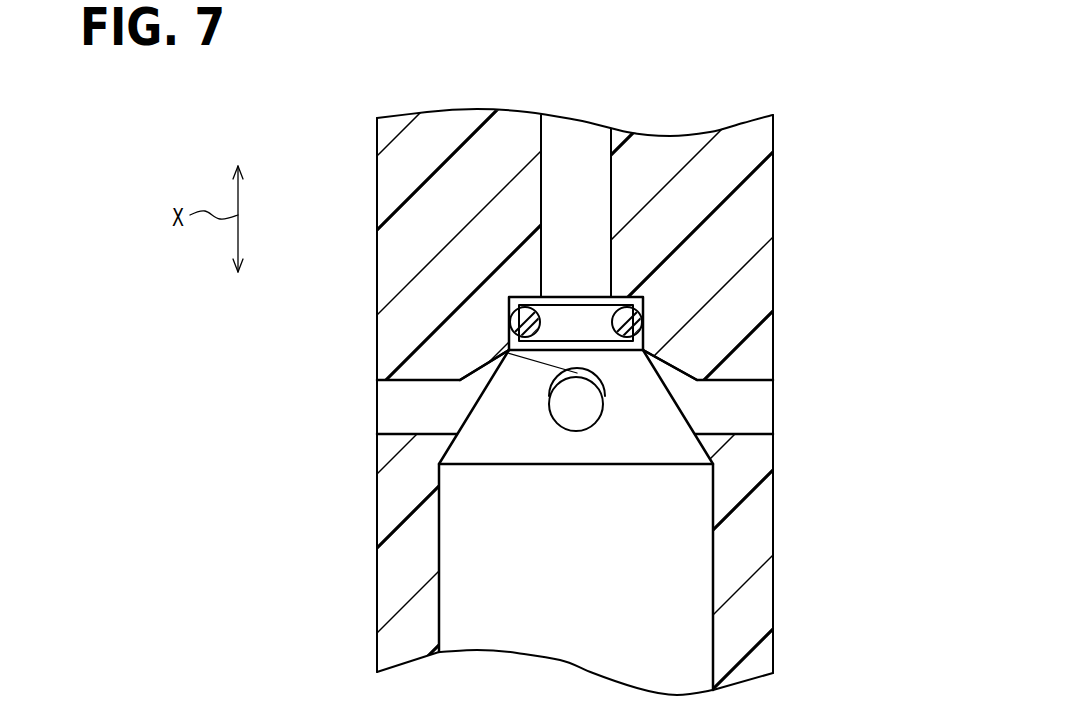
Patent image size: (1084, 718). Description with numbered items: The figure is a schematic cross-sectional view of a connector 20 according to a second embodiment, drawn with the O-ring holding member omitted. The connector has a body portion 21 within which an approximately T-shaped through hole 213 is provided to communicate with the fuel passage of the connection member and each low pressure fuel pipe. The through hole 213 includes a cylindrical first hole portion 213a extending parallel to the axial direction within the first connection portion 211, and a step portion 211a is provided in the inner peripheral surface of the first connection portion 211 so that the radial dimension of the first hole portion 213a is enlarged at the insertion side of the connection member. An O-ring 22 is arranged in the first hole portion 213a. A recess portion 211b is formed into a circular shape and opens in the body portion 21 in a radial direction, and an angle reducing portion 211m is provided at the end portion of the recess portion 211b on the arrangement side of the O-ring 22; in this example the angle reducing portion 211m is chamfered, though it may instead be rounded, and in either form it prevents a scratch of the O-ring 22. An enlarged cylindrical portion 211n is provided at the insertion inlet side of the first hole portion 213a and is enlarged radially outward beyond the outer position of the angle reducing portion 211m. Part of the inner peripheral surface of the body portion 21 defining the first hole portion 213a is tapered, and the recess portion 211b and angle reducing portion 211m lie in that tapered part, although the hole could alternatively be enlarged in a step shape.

The connector 20 is at (542, 363).
The body portion 21 is at (542, 367).
The first connection portion 211 is at (705, 133).
The through hole 213 is at (566, 166).
The first hole portion 213a is at (575, 180).
The O-ring 22 is at (510, 316).
The step portion 211a is at (645, 319).
The angle reducing portion 211m is at (503, 347).
The recess portion 211b is at (577, 405).
The enlarged cylindrical portion 211n is at (583, 518).